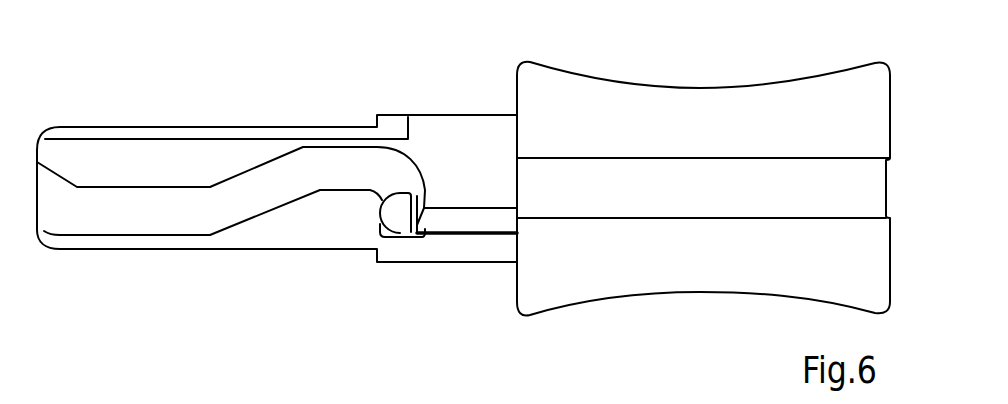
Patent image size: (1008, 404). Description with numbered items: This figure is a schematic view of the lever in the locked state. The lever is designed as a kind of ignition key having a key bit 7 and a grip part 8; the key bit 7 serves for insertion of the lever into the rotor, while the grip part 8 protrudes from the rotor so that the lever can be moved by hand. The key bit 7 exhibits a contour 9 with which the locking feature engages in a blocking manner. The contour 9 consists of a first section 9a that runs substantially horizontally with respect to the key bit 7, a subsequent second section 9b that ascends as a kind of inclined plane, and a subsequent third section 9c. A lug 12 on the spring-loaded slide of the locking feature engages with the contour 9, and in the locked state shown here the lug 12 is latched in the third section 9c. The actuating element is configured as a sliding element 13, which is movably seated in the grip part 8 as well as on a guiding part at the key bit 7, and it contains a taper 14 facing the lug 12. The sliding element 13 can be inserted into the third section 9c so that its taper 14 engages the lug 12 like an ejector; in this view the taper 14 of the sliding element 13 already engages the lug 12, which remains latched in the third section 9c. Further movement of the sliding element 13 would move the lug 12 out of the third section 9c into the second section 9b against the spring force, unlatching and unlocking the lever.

The key bit 7 is at (182, 157).
The grip part 8 is at (653, 113).
The contour 9 is at (190, 207).
The first section 9a is at (105, 213).
The second section 9b is at (268, 195).
The third section 9c is at (385, 183).
The lug 12 is at (400, 212).
The sliding element 13 is at (467, 220).
The taper 14 is at (424, 206).